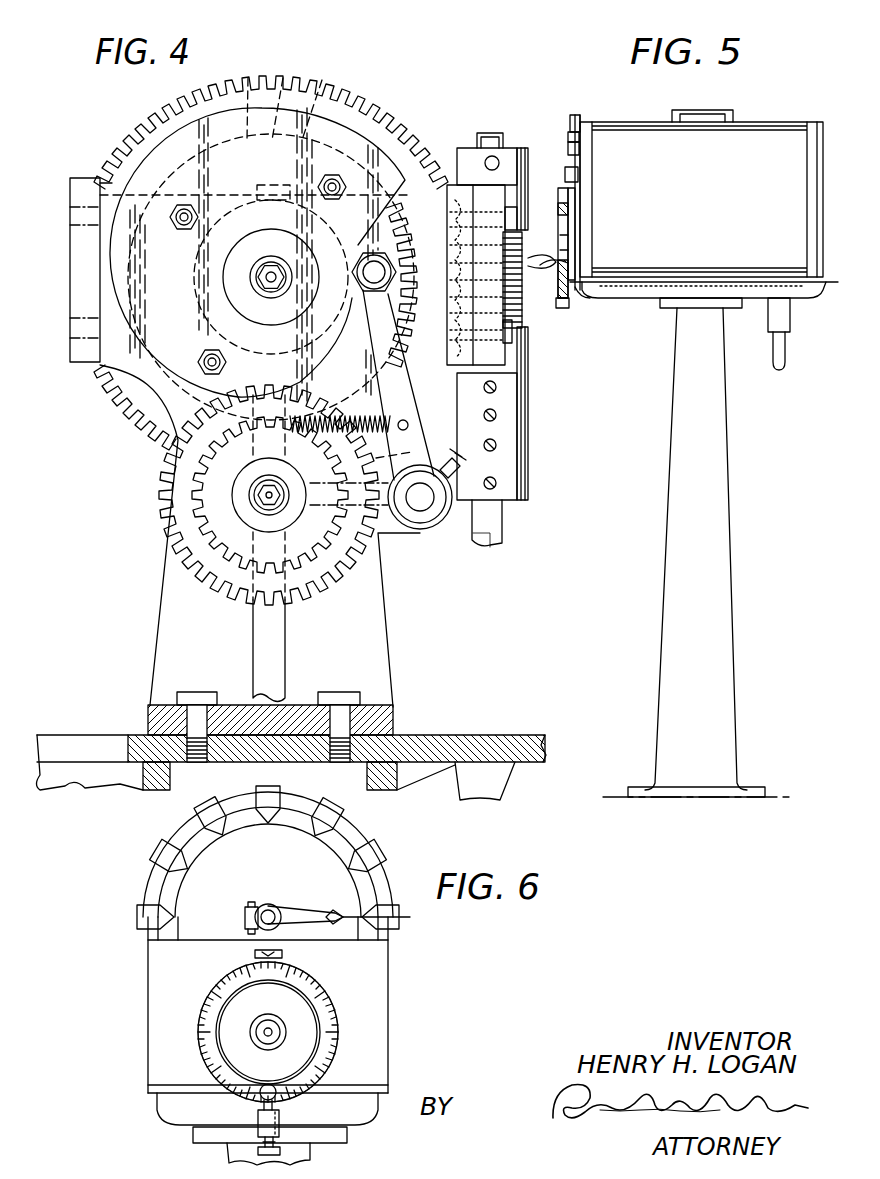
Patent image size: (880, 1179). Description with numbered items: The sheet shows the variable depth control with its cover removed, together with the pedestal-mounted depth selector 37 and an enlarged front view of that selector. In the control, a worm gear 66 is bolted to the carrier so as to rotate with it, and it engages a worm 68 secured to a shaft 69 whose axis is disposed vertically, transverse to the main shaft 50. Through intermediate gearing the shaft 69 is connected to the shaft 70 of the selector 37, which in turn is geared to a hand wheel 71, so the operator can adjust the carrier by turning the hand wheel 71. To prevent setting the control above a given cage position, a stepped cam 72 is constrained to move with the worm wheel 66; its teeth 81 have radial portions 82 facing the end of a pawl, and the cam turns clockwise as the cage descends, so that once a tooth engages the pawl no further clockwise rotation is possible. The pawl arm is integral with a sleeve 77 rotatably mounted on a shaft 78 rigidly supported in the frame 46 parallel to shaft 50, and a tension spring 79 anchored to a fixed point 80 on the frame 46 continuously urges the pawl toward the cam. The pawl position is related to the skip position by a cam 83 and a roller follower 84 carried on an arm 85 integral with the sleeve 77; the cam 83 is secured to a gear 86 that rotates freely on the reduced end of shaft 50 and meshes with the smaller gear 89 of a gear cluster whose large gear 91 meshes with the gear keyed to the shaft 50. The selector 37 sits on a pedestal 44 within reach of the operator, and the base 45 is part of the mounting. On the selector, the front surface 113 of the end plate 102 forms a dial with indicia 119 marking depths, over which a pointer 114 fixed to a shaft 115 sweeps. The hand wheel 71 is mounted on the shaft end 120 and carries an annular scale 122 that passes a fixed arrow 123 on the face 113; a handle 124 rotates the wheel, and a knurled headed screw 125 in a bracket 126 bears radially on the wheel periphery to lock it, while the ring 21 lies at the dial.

In FIG. 5, the selector 37 is at (778, 115).
In FIG. 5, the pedestal 44 is at (720, 583).
In FIG. 4, the base plate 45 is at (462, 736).
In FIG. 4, the frame 46 is at (275, 648).
In FIG. 4, the shaft 50 is at (270, 280).
In FIG. 4, the worm gear 66 is at (365, 108).
In FIG. 4, the worm 68 is at (522, 290).
In FIG. 4, the shaft 69 is at (503, 527).
In FIG. 5, the shaft 70 is at (780, 366).
In FIG. 5, the hand wheel 71 is at (565, 227).
In FIG. 4, the stepped cam 72 is at (320, 99).
In FIG. 4, the sleeve 77 is at (441, 512).
In FIG. 4, the shaft 78 is at (420, 500).
In FIG. 4, the tension spring 79 is at (396, 422).
In FIG. 4, the fixed point 80 is at (270, 420).
In FIG. 4, the teeth 81 is at (235, 99).
In FIG. 4, the radial portions 82 is at (281, 98).
In FIG. 4, the cam 83 is at (322, 416).
In FIG. 4, the roller follower 84 is at (388, 260).
In FIG. 4, the arm 85 is at (400, 346).
In FIG. 4, the gear 86 is at (408, 300).
In FIG. 4, the smaller gear 89 is at (237, 533).
In FIG. 4, the large gear 91 is at (212, 567).
In FIG. 6, the end plate 102 is at (152, 1022).
In FIG. 6, the front surface 113 is at (190, 977).
In FIG. 6, the pointer 114 is at (310, 930).
In FIG. 6, the shaft 115 is at (268, 905).
In FIG. 6, the indicia 119 is at (145, 915).
In FIG. 6, the end of cam shaft 120 is at (255, 1035).
In FIG. 6, the annular scale 122 is at (312, 988).
In FIG. 6, the dial ring 21 is at (340, 1015).
In FIG. 6, the fixed arrow 123 is at (258, 951).
In FIG. 5, the handle 124 is at (578, 265).
In FIG. 6, the handle 124 is at (270, 1084).
In FIG. 6, the knurled headed screw 125 is at (283, 1151).
In FIG. 5, the bracket 126 is at (582, 294).
In FIG. 6, the bracket 126 is at (281, 1120).